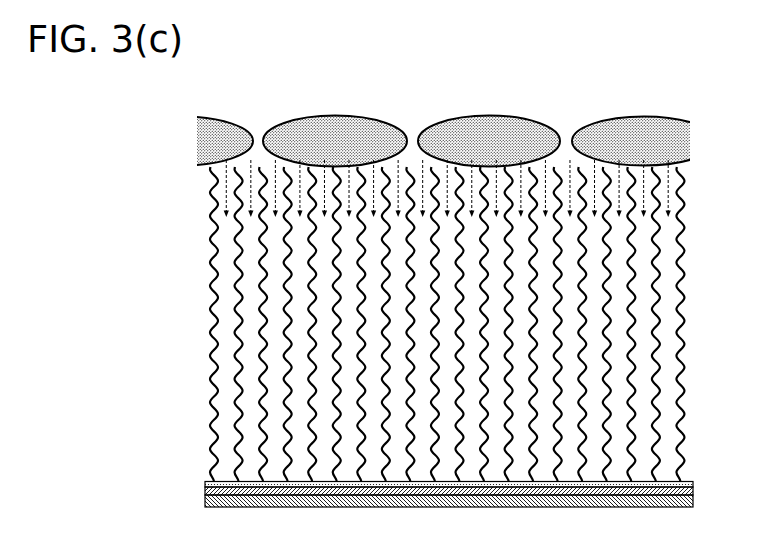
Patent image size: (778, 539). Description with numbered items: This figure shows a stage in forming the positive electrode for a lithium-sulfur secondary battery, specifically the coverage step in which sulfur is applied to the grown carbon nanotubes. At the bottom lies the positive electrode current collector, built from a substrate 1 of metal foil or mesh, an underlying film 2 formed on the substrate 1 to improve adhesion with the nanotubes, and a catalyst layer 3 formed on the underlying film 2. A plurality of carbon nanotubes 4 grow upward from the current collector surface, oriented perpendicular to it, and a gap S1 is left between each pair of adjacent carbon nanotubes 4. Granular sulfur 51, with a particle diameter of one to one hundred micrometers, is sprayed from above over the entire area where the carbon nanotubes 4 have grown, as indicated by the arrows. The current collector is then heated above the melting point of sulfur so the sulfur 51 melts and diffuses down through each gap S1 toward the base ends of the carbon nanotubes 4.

The substrate 1 is at (693, 502).
The underlying film 2 is at (693, 491).
The catalyst layer 3 is at (693, 484).
The carbon nanotubes 4 is at (476, 324).
The granular sulfur 51 is at (540, 122).
The gap S1 is at (663, 358).